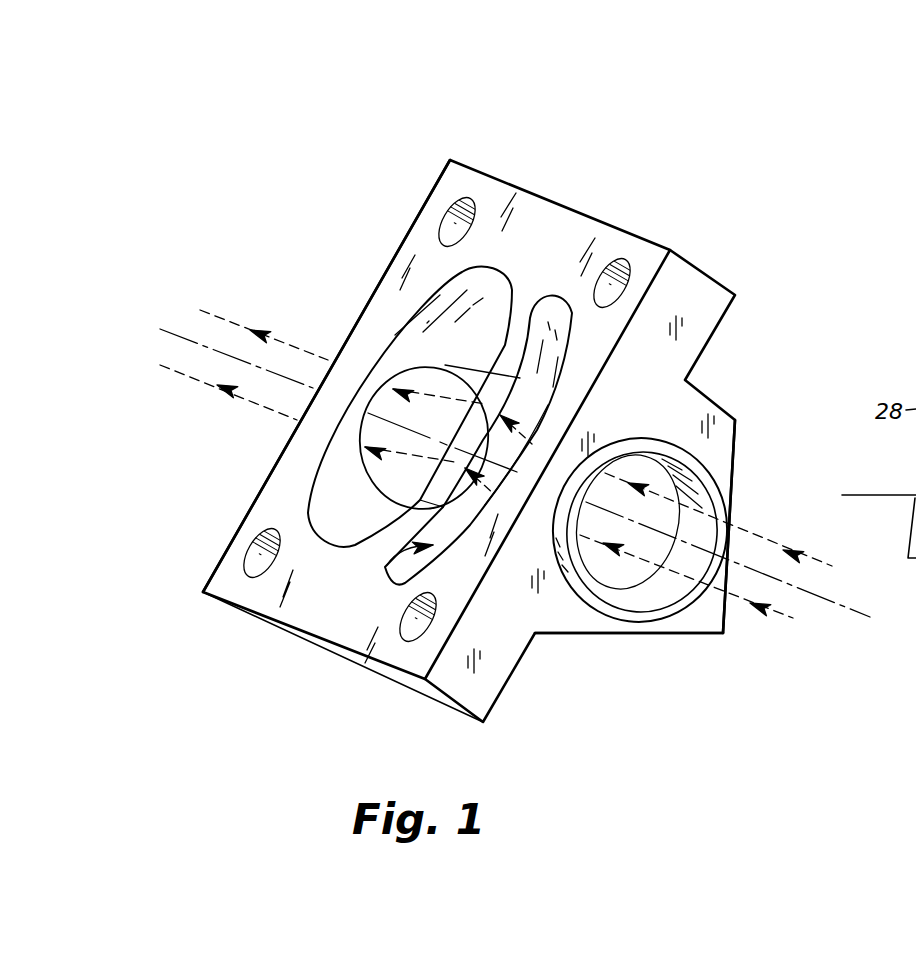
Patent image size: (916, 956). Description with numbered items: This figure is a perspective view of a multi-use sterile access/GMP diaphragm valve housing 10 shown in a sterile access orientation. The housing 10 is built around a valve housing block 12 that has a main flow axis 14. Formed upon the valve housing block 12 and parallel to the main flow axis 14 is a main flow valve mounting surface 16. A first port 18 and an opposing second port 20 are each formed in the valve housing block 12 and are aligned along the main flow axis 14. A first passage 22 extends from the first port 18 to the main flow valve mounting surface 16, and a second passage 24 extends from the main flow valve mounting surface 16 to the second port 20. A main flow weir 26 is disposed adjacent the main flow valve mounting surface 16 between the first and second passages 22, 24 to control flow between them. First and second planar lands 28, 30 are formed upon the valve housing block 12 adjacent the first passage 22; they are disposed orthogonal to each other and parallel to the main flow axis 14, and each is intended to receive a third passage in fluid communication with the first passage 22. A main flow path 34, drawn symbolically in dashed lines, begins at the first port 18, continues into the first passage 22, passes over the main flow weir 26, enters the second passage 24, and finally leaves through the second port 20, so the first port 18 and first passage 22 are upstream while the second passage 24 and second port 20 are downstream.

The multi-use sterile access/GMP diaphragm valve housing 10 is at (371, 128).
The valve housing block 12 is at (704, 268).
The main flow axis 14 is at (835, 608).
The main flow valve mounting surface 16 is at (410, 245).
The first port 18 is at (644, 586).
The second port 20 is at (325, 347).
The first passage 22 is at (398, 505).
The second passage 24 is at (340, 519).
The main flow weir 26 is at (400, 505).
The first planar land 28 is at (733, 458).
The second planar land 30 is at (577, 634).
The main flow path 34 is at (790, 618).